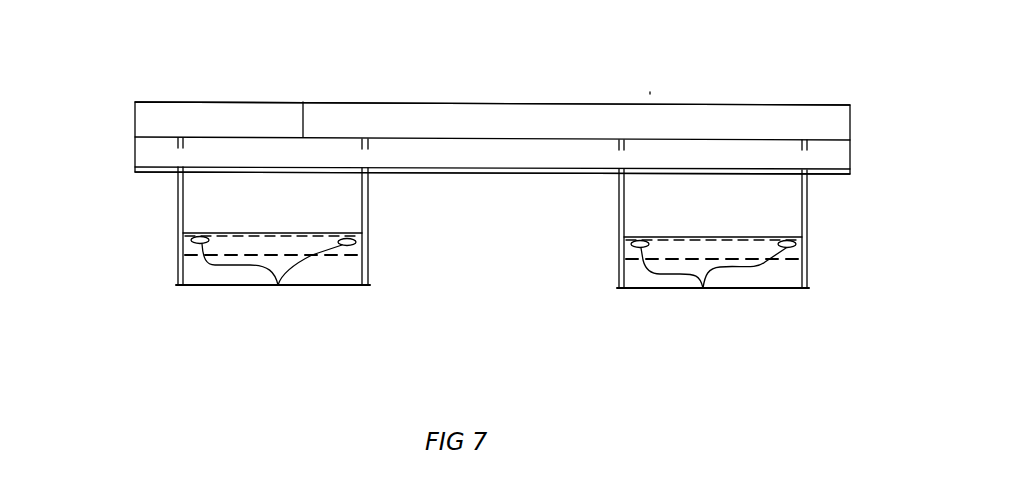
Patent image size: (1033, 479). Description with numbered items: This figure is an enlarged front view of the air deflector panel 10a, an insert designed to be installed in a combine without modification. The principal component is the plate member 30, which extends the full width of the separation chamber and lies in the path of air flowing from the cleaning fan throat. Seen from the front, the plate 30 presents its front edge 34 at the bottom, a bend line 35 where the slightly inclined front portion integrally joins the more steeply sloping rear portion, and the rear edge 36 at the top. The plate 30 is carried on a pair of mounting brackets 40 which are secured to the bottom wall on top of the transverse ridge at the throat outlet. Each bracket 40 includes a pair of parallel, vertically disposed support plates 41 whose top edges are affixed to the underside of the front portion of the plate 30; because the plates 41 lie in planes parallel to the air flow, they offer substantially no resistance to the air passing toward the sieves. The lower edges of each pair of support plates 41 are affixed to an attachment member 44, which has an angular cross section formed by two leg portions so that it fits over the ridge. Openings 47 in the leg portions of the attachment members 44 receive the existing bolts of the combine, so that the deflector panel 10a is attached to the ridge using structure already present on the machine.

The air deflector panel 10a is at (650, 93).
The plate member 30 is at (397, 103).
The front edge 34 is at (153, 173).
The bend line 35 is at (303, 102).
The rear edge 36 is at (195, 102).
The mounting bracket 40 is at (212, 288).
The support plate 41 is at (845, 227).
The attachment member 44 is at (340, 273).
The opening 47 is at (278, 285).